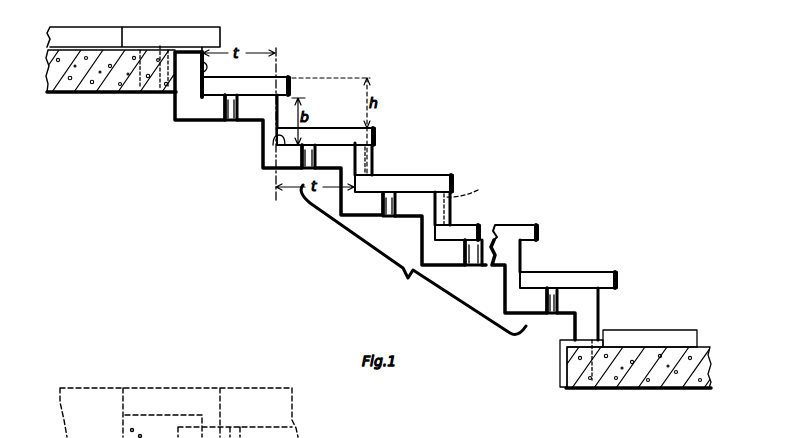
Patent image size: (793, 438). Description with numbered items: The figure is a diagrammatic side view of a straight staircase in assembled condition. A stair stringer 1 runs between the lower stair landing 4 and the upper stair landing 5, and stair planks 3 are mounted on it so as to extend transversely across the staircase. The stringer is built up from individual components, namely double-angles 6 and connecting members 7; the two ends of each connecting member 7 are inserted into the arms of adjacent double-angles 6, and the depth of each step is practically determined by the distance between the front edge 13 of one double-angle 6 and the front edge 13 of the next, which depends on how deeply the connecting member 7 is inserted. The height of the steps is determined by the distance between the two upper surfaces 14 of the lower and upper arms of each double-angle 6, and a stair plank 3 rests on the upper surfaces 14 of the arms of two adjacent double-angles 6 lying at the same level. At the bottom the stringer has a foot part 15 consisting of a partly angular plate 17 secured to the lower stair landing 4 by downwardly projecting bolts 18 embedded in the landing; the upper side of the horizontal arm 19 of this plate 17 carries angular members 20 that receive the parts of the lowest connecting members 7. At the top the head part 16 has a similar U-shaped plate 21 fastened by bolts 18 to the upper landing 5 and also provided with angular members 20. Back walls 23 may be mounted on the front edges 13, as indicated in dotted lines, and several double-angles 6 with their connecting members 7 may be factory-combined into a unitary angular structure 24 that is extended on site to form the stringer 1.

The stair stringer 1 is at (242, 175).
The stair plank 3 is at (456, 185).
The lower stair landing 4 is at (657, 377).
The upper stair landing 5 is at (67, 86).
The double-angle 6 is at (245, 114).
The connecting member 7 is at (310, 146).
The front edge of double-angle 13 is at (198, 85).
The upper surface of arm 14 is at (258, 93).
The foot part 15 is at (550, 396).
The head part 16 is at (224, 21).
The plate 17 is at (565, 365).
The bolt 18 is at (124, 102).
The horizontal arm of plate 19 is at (591, 340).
The angular member 20 is at (187, 88).
The plate 21 is at (118, 48).
The back wall 23 is at (471, 185).
The unitary structure 24 is at (413, 259).